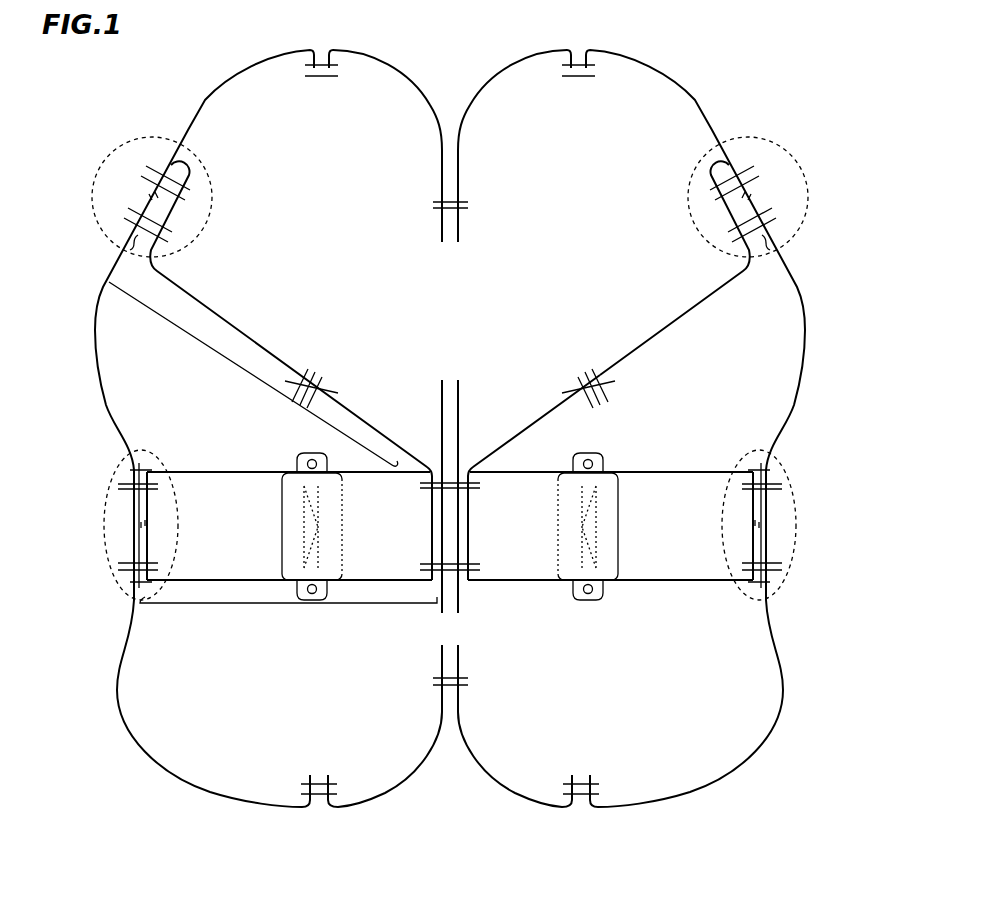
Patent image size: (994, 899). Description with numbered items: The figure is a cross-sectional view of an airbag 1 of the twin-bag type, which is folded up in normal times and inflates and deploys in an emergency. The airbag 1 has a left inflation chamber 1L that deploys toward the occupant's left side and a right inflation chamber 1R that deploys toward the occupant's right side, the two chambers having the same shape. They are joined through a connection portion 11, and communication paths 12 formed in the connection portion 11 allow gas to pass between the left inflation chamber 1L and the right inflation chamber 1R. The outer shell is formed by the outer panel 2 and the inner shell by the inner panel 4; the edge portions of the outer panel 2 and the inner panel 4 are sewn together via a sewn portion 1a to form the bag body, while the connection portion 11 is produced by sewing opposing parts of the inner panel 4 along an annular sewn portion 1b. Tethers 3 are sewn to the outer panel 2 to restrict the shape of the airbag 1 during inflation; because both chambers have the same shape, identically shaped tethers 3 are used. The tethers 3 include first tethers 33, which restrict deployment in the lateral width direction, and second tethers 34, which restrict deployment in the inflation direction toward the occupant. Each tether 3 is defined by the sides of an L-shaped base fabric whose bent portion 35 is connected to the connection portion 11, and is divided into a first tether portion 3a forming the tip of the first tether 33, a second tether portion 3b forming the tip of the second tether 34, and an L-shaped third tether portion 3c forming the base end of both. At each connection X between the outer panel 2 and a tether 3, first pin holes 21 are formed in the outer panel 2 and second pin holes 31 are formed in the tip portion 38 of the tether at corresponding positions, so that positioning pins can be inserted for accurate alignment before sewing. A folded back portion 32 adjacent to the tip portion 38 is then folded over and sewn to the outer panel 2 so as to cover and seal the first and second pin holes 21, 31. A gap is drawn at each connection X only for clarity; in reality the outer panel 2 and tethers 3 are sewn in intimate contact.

The airbag 1 is at (764, 63).
The sewn portion 1a is at (304, 72).
The annular sewn portion 1b is at (432, 205).
The left inflation chamber 1L is at (299, 152).
The right inflation chamber 1R is at (579, 152).
The outer panel 2 is at (94, 330).
The tether 3 is at (288, 329).
The first tether portion 3a is at (673, 583).
The second tether portion 3b is at (687, 312).
The third tether portion 3c is at (533, 429).
The inner panel 4 is at (441, 171).
The connection portion 11 is at (461, 223).
The communication path 12 is at (439, 283).
The first pin hole 21 is at (144, 194).
The second pin hole 31 is at (161, 208).
The folded back portion 32 is at (176, 197).
The first tether 33 is at (288, 604).
The second tether 34 is at (257, 378).
The bent portion 35 is at (430, 522).
The tip portion 38 is at (450, 259).
The connection X is at (91, 192).